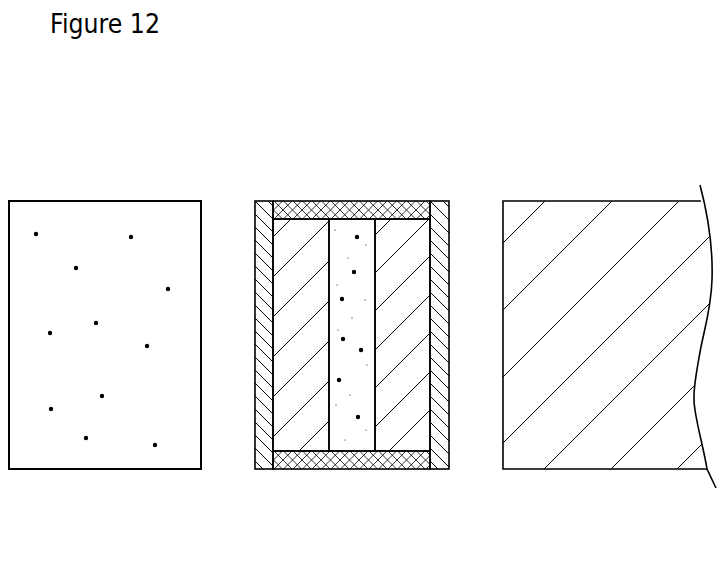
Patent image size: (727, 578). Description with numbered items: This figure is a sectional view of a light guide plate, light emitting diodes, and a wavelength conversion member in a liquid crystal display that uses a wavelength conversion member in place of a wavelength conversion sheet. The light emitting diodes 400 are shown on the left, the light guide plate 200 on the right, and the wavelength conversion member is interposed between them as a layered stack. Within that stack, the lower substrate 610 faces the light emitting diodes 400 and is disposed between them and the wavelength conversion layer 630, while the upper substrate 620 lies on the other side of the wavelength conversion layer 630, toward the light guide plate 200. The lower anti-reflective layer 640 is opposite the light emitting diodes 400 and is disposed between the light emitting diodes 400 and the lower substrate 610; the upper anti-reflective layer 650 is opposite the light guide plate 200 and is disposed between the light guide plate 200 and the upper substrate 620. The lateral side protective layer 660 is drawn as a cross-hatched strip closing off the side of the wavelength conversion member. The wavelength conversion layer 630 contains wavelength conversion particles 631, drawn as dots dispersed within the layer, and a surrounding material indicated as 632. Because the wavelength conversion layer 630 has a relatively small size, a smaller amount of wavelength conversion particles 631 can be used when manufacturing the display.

The light emitting diodes 400 is at (100, 457).
The light guide plate 200 is at (600, 457).
The lower substrate 610 is at (308, 433).
The upper substrate 620 is at (402, 435).
The wavelength conversion layer 630 is at (354, 388).
The wavelength conversion particles 631 is at (345, 435).
The matrix of intermediate layer 632 is at (360, 435).
The lower anti-reflective layer 640 is at (264, 462).
The upper anti-reflective layer 650 is at (438, 462).
The lateral side protective layer 660 is at (352, 200).